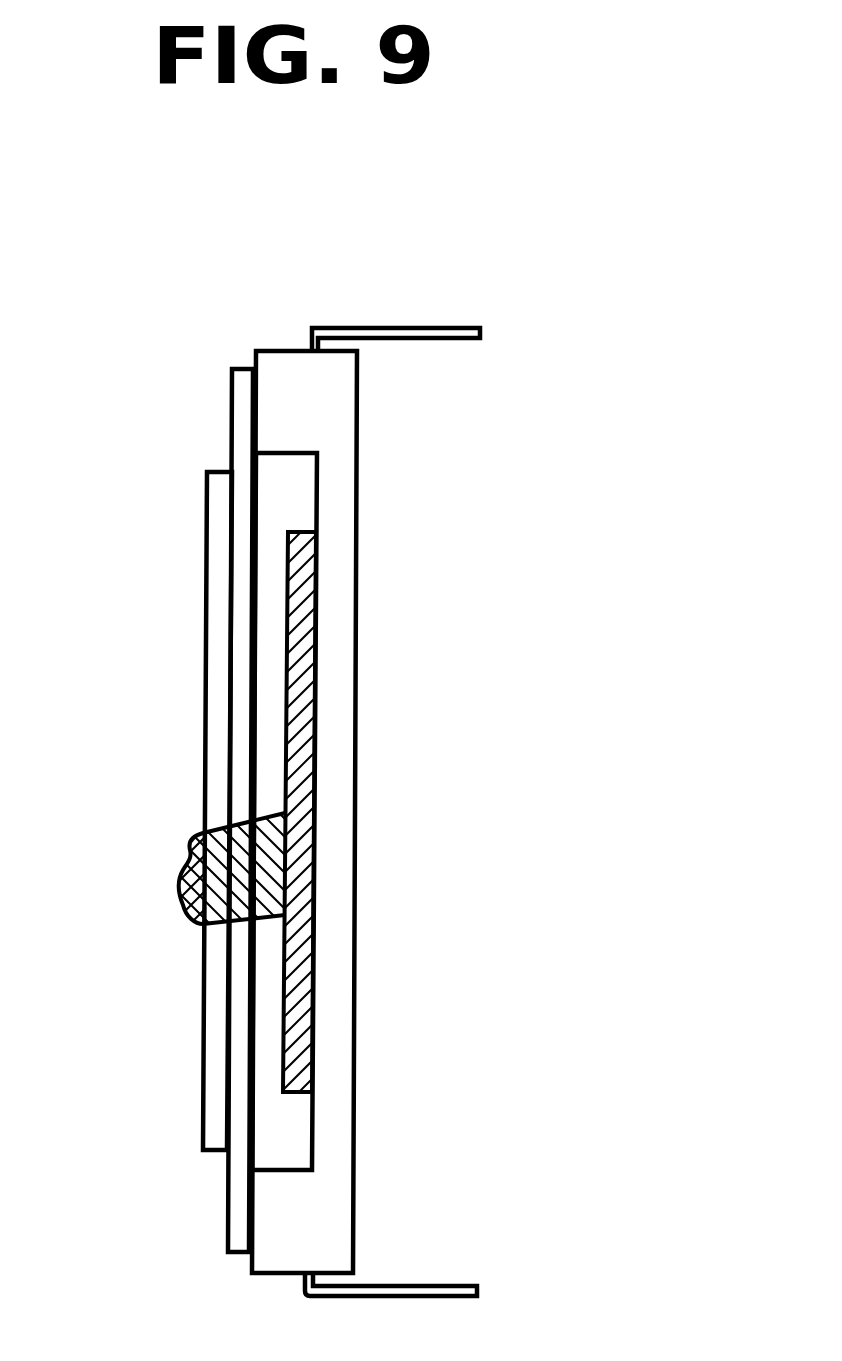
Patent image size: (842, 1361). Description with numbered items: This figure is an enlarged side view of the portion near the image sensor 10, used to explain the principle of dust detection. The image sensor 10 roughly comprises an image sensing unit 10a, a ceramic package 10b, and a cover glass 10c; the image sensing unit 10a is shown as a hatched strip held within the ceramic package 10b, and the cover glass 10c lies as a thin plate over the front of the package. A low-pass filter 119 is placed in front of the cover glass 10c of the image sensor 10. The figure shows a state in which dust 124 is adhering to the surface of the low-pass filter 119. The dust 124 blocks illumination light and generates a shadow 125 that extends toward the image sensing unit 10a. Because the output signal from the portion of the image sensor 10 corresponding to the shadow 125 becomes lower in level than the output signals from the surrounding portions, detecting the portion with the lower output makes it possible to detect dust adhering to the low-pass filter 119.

The image sensor 10 is at (421, 773).
The image sensing unit 10a is at (303, 620).
The ceramic package 10b is at (357, 410).
The cover glass 10c is at (232, 408).
The low-pass filter 119 is at (207, 595).
The dust 124 is at (185, 879).
The shadow 125 is at (245, 903).